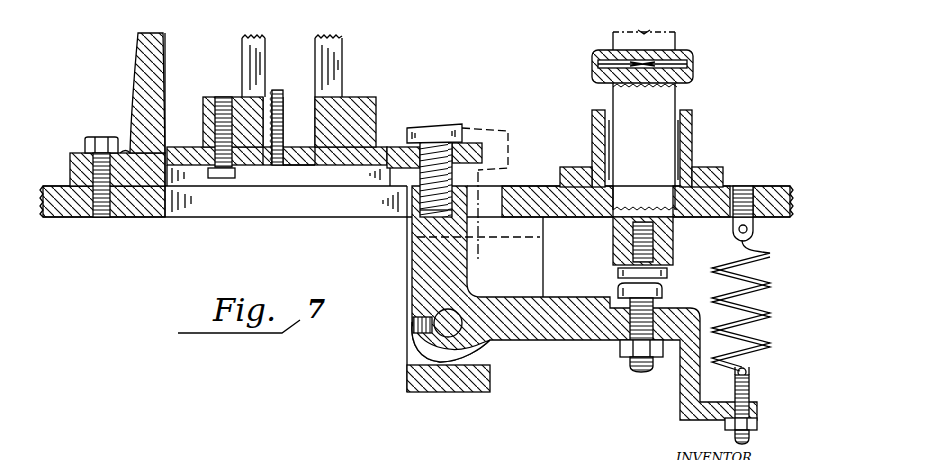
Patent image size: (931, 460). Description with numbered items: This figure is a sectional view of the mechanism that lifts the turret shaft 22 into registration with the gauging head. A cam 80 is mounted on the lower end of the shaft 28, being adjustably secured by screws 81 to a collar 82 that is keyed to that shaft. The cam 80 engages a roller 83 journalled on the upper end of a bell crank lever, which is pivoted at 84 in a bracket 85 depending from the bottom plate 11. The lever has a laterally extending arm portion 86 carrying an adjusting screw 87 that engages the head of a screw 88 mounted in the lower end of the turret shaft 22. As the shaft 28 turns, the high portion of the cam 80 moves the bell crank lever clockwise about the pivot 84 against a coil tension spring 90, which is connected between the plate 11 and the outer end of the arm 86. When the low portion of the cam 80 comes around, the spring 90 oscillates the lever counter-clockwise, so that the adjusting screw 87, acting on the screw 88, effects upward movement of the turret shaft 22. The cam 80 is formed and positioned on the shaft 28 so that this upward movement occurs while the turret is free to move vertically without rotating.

The bottom plate 11 is at (518, 191).
The turret shaft 22 is at (660, 146).
The shaft 28 is at (298, 38).
The cam 80 is at (378, 147).
The screws 81 is at (226, 97).
The collar 82 is at (360, 100).
The roller 83 is at (470, 131).
The pivot 84 is at (416, 346).
The bracket 85 is at (416, 362).
The arm portion 86 is at (572, 336).
The adjusting screw 87 is at (662, 290).
The screw 88 is at (668, 276).
The coil tension spring 90 is at (770, 284).